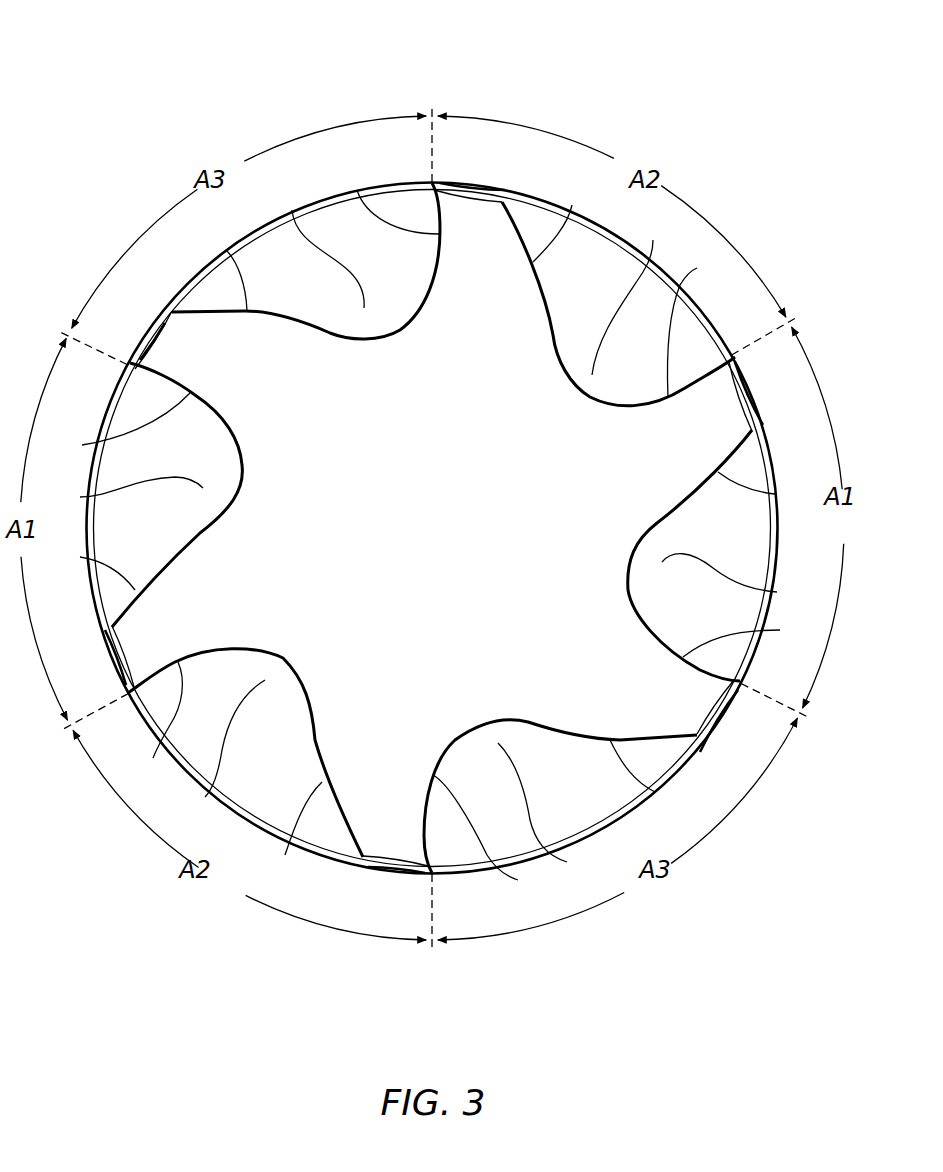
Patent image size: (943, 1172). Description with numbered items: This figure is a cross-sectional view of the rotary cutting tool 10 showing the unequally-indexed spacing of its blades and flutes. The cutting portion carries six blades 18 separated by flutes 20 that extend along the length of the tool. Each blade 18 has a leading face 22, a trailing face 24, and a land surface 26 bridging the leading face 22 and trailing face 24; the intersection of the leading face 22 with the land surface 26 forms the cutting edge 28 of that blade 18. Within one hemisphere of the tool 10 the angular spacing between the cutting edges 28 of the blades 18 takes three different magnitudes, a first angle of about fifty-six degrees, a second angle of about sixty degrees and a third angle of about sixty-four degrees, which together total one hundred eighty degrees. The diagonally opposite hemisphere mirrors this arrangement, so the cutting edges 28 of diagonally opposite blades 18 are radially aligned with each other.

The rotary cutting tool 10 is at (122, 56).
The blade 18 is at (155, 311).
The flute 20 is at (292, 210).
The leading face 22 is at (357, 190).
The trailing face 24 is at (226, 250).
The land surface 26 is at (155, 330).
The cutting edge 28 is at (431, 183).